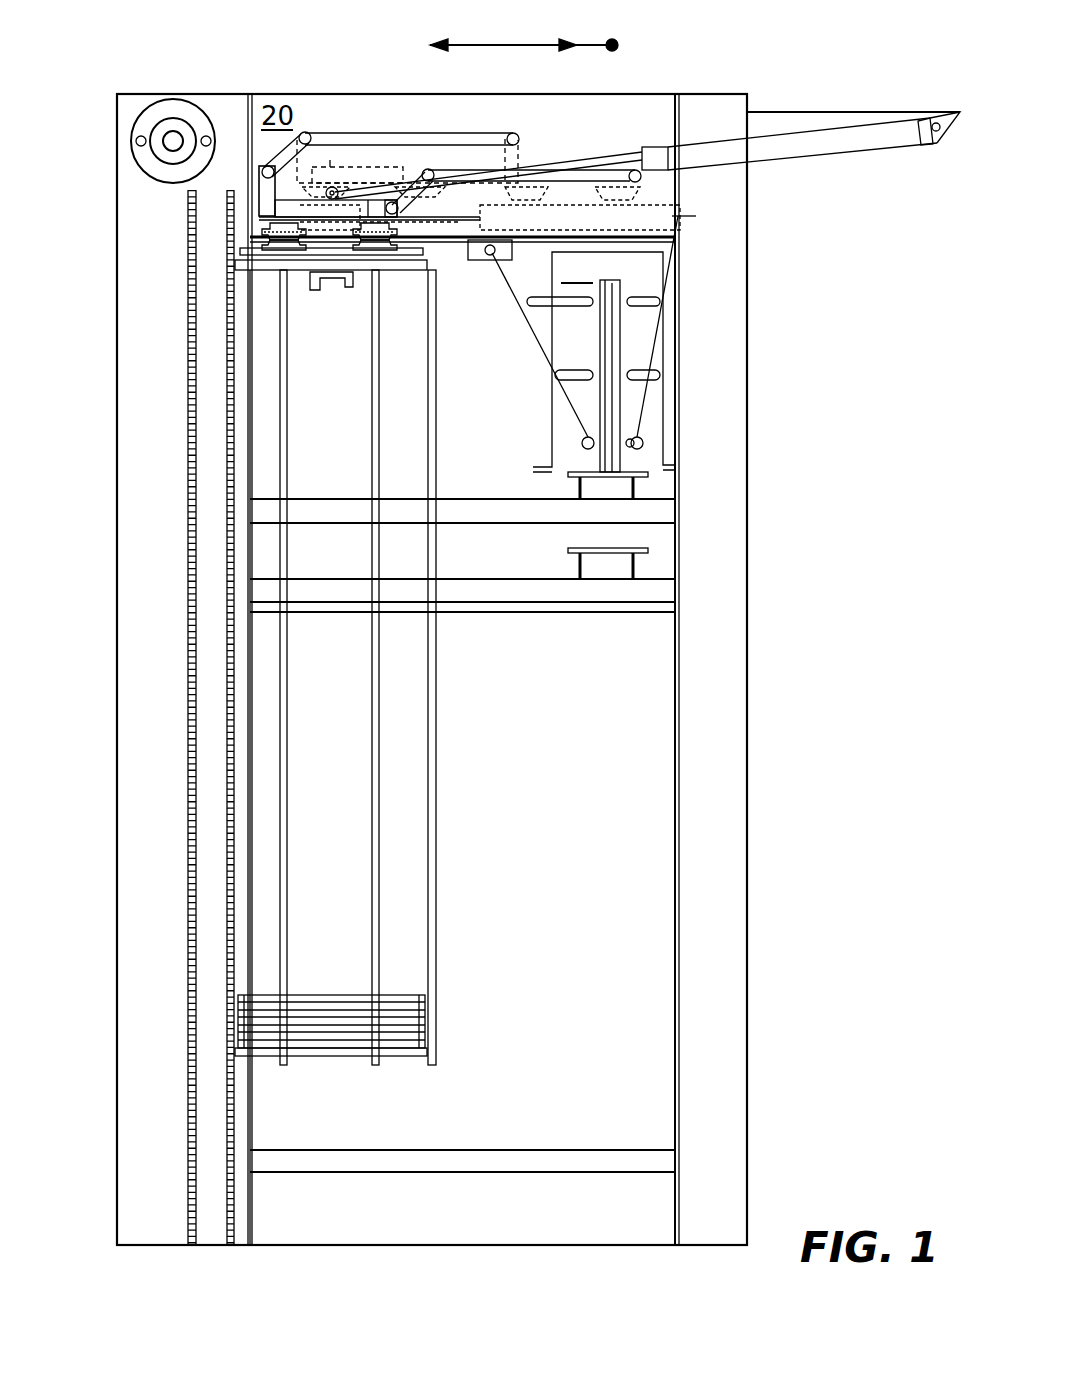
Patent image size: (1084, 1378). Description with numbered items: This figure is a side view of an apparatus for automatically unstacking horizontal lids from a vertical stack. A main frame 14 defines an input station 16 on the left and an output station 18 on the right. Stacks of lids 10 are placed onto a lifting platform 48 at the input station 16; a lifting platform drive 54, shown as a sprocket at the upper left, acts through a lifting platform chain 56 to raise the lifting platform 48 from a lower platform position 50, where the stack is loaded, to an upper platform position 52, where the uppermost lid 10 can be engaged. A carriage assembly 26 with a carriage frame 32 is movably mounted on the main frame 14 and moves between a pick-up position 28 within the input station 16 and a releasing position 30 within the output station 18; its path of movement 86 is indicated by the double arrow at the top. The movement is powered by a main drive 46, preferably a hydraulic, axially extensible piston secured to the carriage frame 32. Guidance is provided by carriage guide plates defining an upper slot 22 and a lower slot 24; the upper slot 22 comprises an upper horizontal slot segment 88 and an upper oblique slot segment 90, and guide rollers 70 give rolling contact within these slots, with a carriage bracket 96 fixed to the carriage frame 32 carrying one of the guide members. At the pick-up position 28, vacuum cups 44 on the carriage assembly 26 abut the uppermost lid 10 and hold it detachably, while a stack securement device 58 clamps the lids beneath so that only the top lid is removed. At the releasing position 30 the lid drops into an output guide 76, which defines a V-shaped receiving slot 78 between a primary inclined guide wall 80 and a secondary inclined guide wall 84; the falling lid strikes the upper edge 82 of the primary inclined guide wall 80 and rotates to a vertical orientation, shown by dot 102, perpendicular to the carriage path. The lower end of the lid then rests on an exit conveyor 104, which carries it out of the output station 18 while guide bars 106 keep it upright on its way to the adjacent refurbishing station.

The lid 10 is at (395, 263).
The main frame 14 is at (700, 94).
The input station 16 is at (347, 927).
The output station 18 is at (656, 245).
The upper slot 22 is at (410, 135).
The lower slot 24 is at (448, 170).
The carriage assembly 26 is at (257, 200).
The pick-up position 28 is at (258, 214).
The releasing position 30 is at (633, 170).
The carriage frame 32 is at (334, 187).
The vacuum cups 44 is at (348, 242).
The main drive 46 is at (808, 132).
The lifting platform 48 is at (400, 1058).
The lower platform position 50 is at (425, 1028).
The upper platform position 52 is at (313, 243).
The lifting platform drive 54 is at (163, 108).
The lifting platform chain 56 is at (188, 567).
The stack securement device 58 is at (333, 283).
The guide rollers 70 is at (305, 132).
The output guide 76 is at (620, 325).
The V-shaped receiving slot 78 is at (604, 362).
The primary inclined guide wall 80 is at (533, 333).
The upper edge 82 is at (489, 257).
The secondary inclined guide wall 84 is at (630, 390).
The path of movement of the carriage assembly 86 is at (502, 45).
The upper horizontal slot segment 88 is at (383, 135).
The upper oblique slot segment 90 is at (290, 145).
The carriage bracket 96 is at (262, 185).
The orientation of the V-shaped slot 102 is at (612, 40).
The exit conveyor 104 is at (648, 462).
The guide bars 106 is at (640, 283).